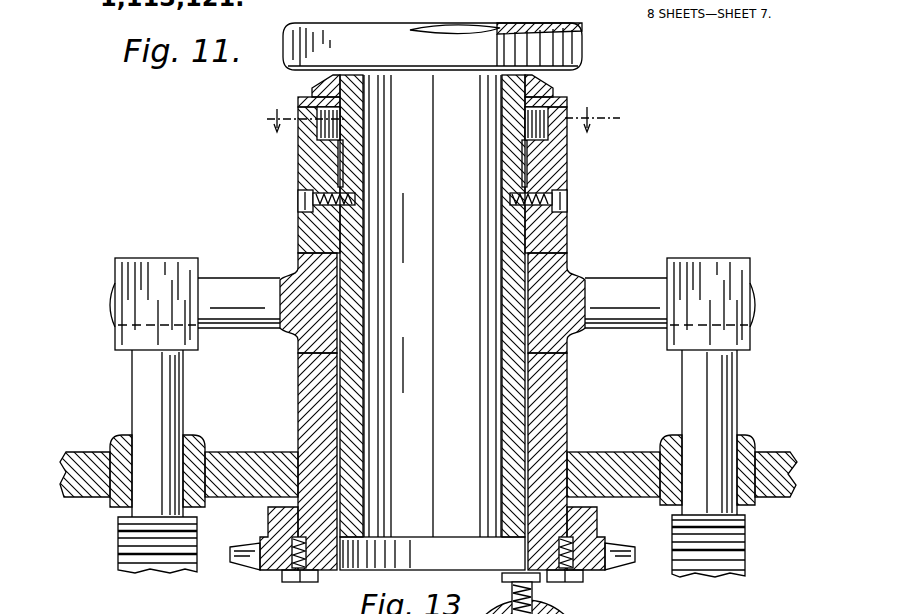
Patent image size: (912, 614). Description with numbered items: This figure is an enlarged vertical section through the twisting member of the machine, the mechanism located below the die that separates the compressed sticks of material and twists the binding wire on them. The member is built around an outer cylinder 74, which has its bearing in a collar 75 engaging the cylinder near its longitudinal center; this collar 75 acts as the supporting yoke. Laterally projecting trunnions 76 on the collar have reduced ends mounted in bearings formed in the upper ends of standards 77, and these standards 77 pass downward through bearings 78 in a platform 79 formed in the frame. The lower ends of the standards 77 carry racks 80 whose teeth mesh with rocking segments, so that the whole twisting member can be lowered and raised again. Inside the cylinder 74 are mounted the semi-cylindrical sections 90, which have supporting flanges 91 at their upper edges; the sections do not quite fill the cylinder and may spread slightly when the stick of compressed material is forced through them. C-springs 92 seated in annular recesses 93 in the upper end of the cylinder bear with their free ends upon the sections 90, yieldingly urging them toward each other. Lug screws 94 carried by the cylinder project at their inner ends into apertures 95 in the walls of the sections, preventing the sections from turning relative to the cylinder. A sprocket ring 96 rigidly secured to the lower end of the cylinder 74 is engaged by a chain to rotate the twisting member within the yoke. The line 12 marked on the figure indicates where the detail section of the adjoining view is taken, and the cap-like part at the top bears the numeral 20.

The hand wheel cap 20 is at (583, 43).
The supporting flanges 91 is at (312, 88).
The C-springs 92 is at (533, 128).
The annular recesses 93 is at (545, 127).
The line 12— 12 is at (444, 120).
The lug screws 94 is at (300, 197).
The apertures 95 is at (362, 178).
The outer cylinder 74 is at (552, 403).
The semi-cylindrical sections 90 is at (432, 306).
The collar 75 is at (553, 262).
The trunnions 76 is at (237, 323).
The standards 77 is at (172, 408).
The bearings 78 is at (107, 498).
The platform 79 is at (242, 462).
The racks 80 is at (130, 562).
The sprocket ring 96 is at (598, 563).